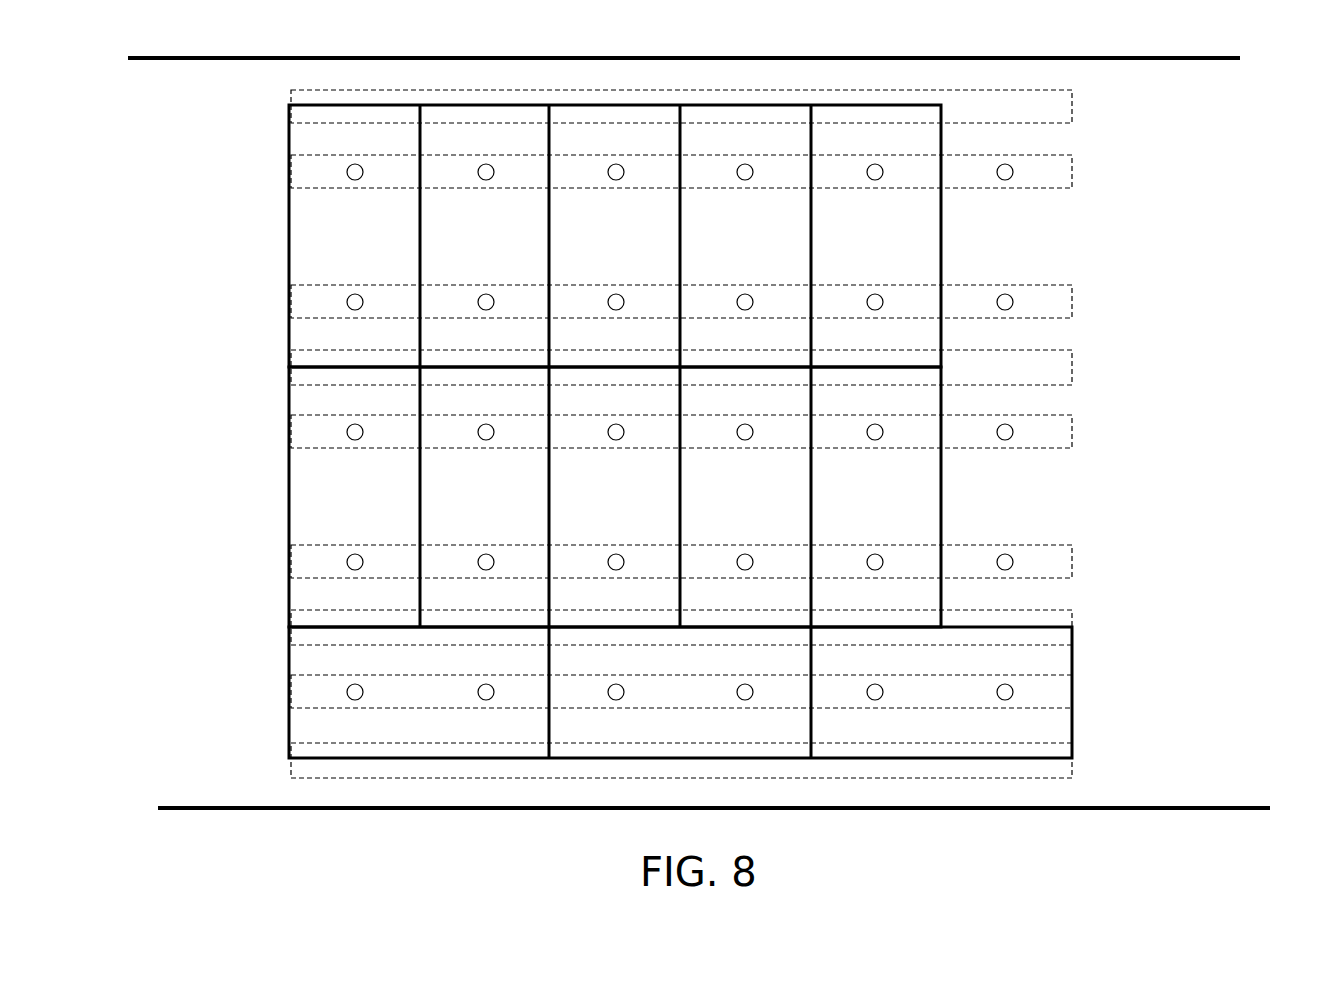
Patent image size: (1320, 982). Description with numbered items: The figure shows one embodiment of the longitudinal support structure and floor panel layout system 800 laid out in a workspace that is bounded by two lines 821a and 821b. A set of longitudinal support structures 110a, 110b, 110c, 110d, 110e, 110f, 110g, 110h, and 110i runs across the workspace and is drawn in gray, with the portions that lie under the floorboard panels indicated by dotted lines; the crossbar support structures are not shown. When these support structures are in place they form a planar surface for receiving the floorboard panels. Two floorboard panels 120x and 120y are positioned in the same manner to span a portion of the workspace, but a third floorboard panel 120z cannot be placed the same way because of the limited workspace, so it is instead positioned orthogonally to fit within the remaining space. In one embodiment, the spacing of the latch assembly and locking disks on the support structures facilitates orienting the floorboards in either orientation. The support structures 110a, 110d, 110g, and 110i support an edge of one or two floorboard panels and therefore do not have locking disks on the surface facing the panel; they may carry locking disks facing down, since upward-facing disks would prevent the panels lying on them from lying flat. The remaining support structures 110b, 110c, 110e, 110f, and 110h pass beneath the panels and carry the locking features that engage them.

The longitudinal support structure and floor panel layout system 800 is at (628, 30).
The workspace boundary line 821a is at (228, 55).
The workspace boundary line 821b is at (298, 811).
The longitudinal support structure 110a is at (1082, 98).
The longitudinal support structure 110b is at (1080, 172).
The longitudinal support structure 110c is at (1075, 303).
The longitudinal support structure 110d is at (1080, 370).
The longitudinal support structure 110e is at (1082, 437).
The longitudinal support structure 110f is at (1078, 566).
The longitudinal support structure 110g is at (1078, 640).
The longitudinal support structure 110h is at (1078, 706).
The longitudinal support structure 110i is at (1078, 775).
The floorboard panel 120x is at (318, 256).
The floorboard panel 120y is at (332, 524).
The third floorboard panel 120z is at (318, 730).